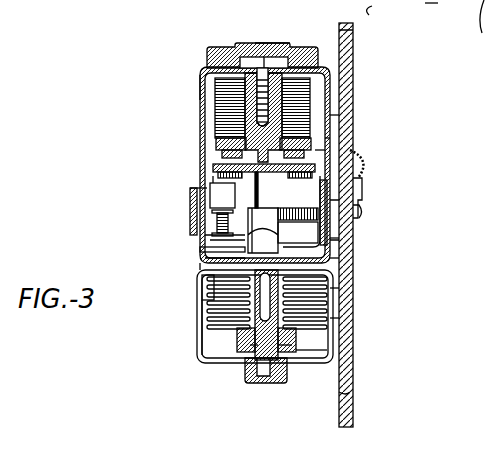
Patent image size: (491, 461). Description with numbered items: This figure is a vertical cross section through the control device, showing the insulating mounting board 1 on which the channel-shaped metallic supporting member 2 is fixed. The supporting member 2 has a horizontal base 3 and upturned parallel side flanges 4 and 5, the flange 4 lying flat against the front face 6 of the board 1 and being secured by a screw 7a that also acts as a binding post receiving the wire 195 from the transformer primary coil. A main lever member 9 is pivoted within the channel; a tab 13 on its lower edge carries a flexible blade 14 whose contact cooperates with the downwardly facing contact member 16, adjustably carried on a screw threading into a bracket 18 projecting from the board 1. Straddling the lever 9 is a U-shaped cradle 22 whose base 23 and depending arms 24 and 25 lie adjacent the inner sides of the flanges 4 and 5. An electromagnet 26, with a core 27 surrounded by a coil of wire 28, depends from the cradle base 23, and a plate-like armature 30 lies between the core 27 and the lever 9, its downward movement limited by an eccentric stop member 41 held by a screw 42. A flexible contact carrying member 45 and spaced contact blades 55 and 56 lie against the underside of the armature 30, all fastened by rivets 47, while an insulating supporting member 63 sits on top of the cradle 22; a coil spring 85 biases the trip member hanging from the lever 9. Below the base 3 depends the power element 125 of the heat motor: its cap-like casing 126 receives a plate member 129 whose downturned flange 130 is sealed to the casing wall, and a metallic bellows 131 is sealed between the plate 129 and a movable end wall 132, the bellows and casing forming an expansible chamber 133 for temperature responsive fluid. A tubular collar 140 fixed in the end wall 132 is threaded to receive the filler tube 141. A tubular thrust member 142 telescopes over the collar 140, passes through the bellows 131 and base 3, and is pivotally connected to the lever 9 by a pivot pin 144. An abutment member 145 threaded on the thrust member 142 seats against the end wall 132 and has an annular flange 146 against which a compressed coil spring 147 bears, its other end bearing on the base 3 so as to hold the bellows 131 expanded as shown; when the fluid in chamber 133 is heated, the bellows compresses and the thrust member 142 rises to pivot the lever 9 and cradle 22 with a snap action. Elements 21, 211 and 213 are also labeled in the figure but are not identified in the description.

The mounting board 1 is at (347, 362).
The channel-shaped supporting member 2 is at (199, 270).
The base portion 3 is at (341, 258).
The side flange 4 is at (334, 238).
The side flange 5 is at (210, 240).
The front face 6 is at (339, 30).
The screw 7a is at (361, 215).
The main lever member 9 is at (268, 222).
The tab 13 is at (205, 235).
The flexible blade 14 is at (205, 262).
The contact member 16 is at (252, 226).
The bracket 18 is at (200, 188).
The panel 21 is at (484, 27).
The cradle 22 is at (199, 70).
The cradle base 23 is at (230, 68).
The cradle arm 24 is at (341, 121).
The cradle arm 25 is at (200, 125).
The electromagnet 26 is at (215, 99).
The core 27 is at (249, 121).
The coil of wire 28 is at (226, 110).
The armature 30 is at (250, 168).
The stop member 41 is at (255, 200).
The screw 42 is at (222, 195).
The contact carrying member 45 is at (326, 140).
The rivets 47 is at (298, 201).
The contact carrying blade 55 is at (321, 152).
The contact carrying blade 56 is at (218, 175).
The supporting member 63 is at (274, 46).
The coil spring 85 is at (356, 186).
The power element 125 is at (193, 365).
The casing 126 is at (208, 358).
The plate member 129 is at (202, 289).
The downturned flange 130 is at (222, 300).
The bellows member 131 is at (233, 318).
The movable end wall 132 is at (301, 352).
The expansible chamber 133 is at (231, 352).
The tubular collar 140 is at (263, 385).
The filler tube 141 is at (345, 318).
The thrust member 142 is at (215, 250).
The pivot pin 144 is at (280, 233).
The abutment member 145 is at (251, 346).
The annular flange 146 is at (292, 346).
The coil spring 147 is at (238, 320).
The wire 195 is at (366, 161).
The panel edge 211 is at (387, 11).
The panel lip 213 is at (450, 6).